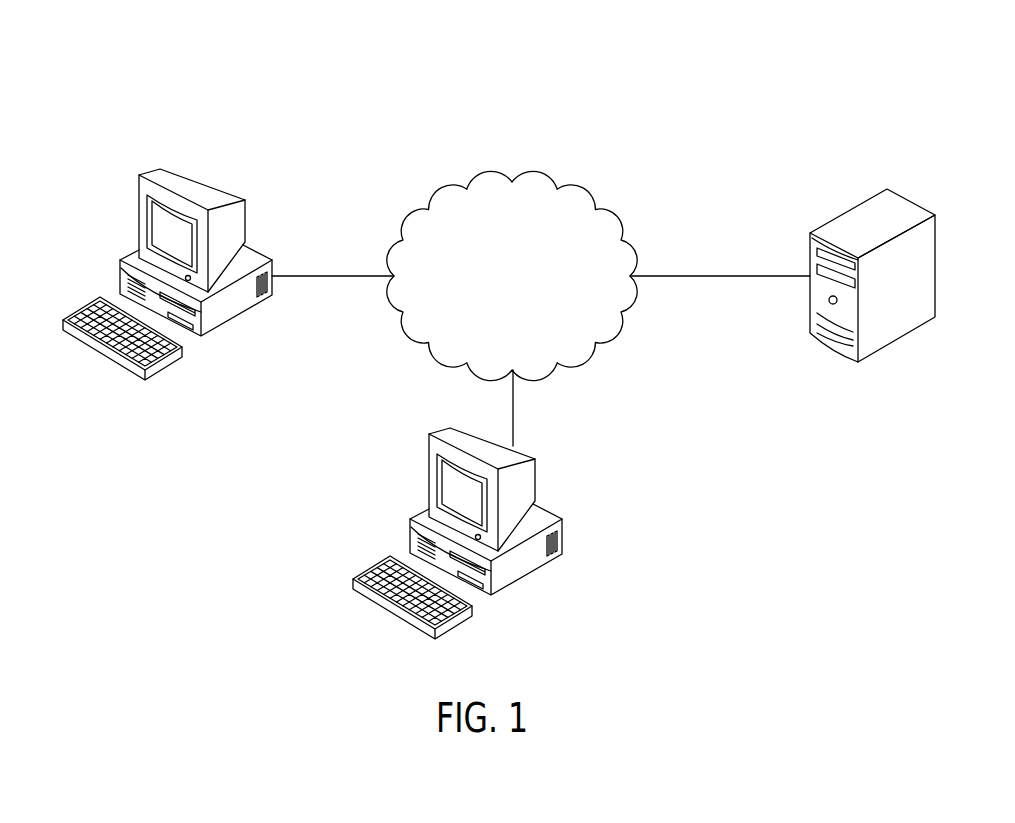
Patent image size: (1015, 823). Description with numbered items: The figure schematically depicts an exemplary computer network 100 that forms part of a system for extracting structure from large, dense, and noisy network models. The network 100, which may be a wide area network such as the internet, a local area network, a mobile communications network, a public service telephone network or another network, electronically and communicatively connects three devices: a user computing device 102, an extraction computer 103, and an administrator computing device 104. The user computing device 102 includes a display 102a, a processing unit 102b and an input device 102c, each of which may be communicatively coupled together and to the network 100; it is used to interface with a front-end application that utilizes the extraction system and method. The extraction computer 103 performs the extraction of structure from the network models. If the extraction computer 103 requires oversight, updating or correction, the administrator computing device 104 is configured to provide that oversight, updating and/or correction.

The computer network 100 is at (598, 140).
The user computing device 102 is at (184, 229).
The display 102a is at (140, 187).
The processing unit 102b is at (225, 316).
The input device 102c is at (155, 363).
The extraction computer 103 is at (917, 185).
The administrator computing device 104 is at (558, 473).